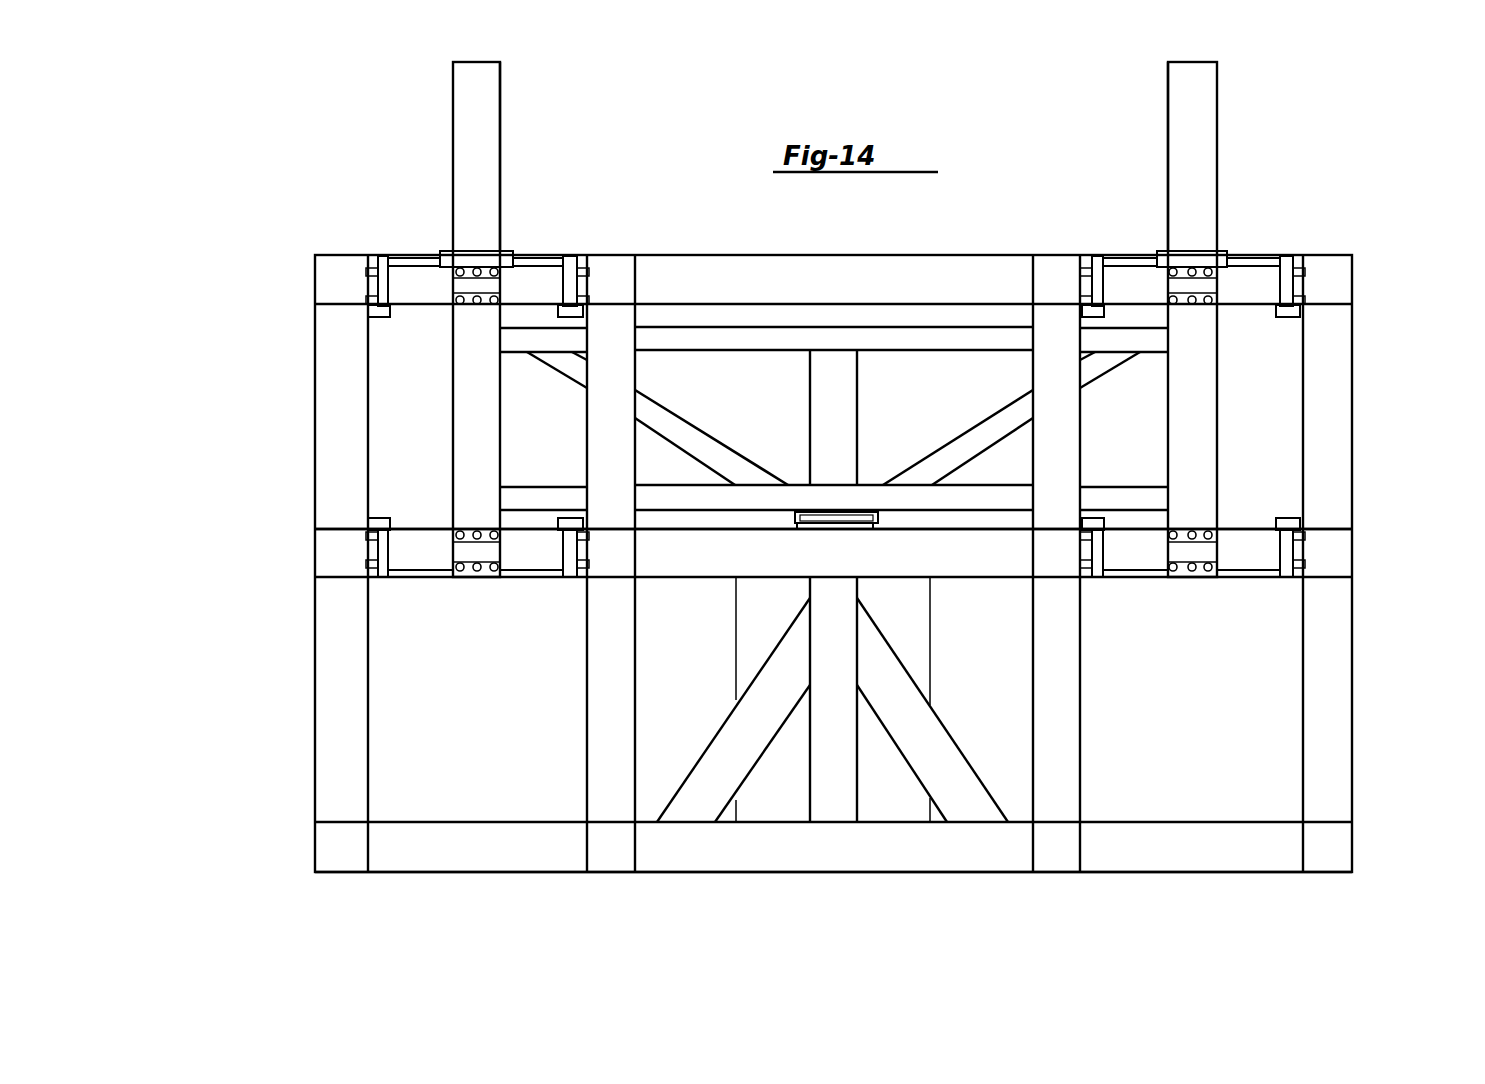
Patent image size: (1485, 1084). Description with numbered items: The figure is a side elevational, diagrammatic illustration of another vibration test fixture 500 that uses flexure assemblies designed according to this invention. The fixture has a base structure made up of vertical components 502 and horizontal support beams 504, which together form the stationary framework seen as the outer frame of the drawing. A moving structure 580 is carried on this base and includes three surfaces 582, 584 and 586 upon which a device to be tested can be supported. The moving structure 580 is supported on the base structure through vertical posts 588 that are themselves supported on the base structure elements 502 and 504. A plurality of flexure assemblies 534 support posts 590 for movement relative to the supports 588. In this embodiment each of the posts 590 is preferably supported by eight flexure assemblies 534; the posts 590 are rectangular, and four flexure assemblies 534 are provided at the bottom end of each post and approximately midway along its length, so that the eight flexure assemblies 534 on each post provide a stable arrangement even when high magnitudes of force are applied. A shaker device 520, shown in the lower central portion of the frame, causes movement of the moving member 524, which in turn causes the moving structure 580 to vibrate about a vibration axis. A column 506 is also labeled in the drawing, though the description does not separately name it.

The vibration test fixture 500 is at (273, 561).
The vertical components 502 is at (313, 748).
The horizontal support beams 504 is at (498, 838).
The vertical column 506 is at (602, 637).
The shaker device 520 is at (912, 647).
The moving member 524 is at (790, 515).
The flexure assemblies 534 is at (566, 250).
The moving structure 580 is at (828, 320).
The surface 582 is at (683, 327).
The surface 584 is at (499, 204).
The surface 586 is at (1163, 139).
The vertical posts 588 is at (335, 407).
The posts 590 is at (488, 73).